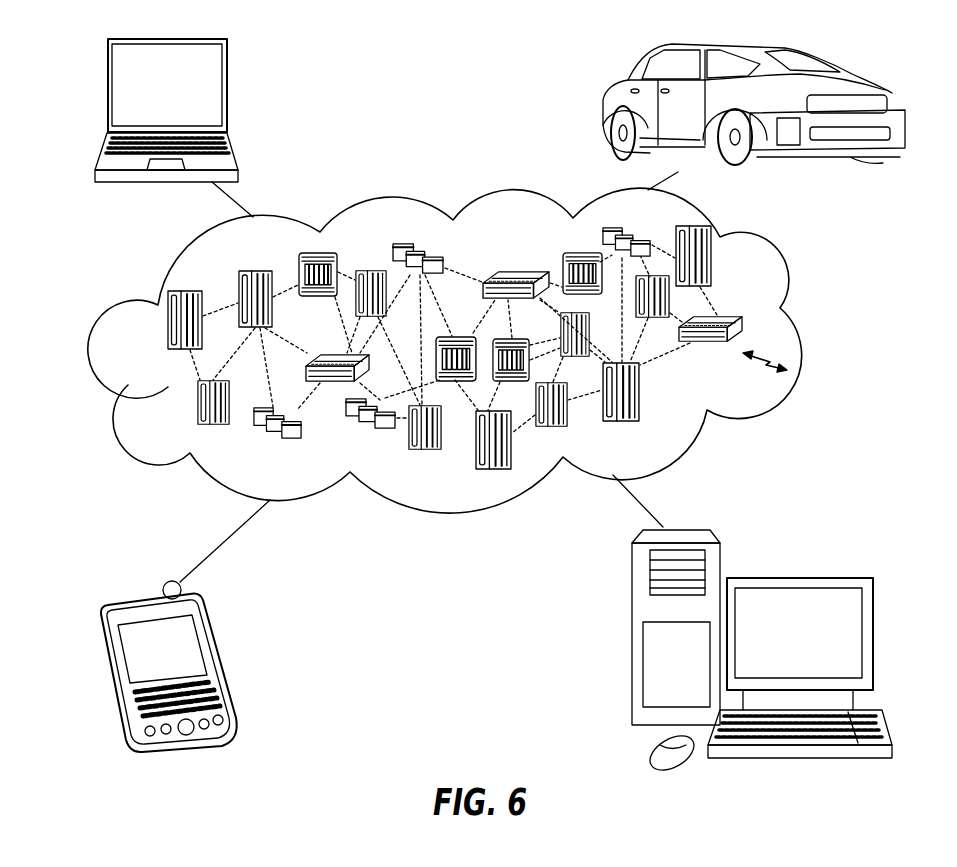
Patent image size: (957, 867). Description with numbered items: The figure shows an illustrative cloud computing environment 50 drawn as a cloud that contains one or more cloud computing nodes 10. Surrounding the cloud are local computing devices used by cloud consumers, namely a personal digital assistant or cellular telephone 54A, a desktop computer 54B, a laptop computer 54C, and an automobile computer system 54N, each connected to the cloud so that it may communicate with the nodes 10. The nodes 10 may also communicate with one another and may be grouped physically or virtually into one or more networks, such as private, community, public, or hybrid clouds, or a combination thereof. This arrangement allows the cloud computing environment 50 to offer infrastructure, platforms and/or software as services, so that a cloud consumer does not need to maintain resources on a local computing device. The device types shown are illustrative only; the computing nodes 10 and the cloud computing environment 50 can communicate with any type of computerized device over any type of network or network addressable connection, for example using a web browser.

The cloud computing node 10 is at (785, 373).
The cloud computing environment 50 is at (797, 328).
The personal digital assistant or cellular telephone 54A is at (218, 663).
The desktop computer 54B is at (796, 578).
The laptop computer 54C is at (228, 92).
The automobile computer system 54N is at (603, 108).